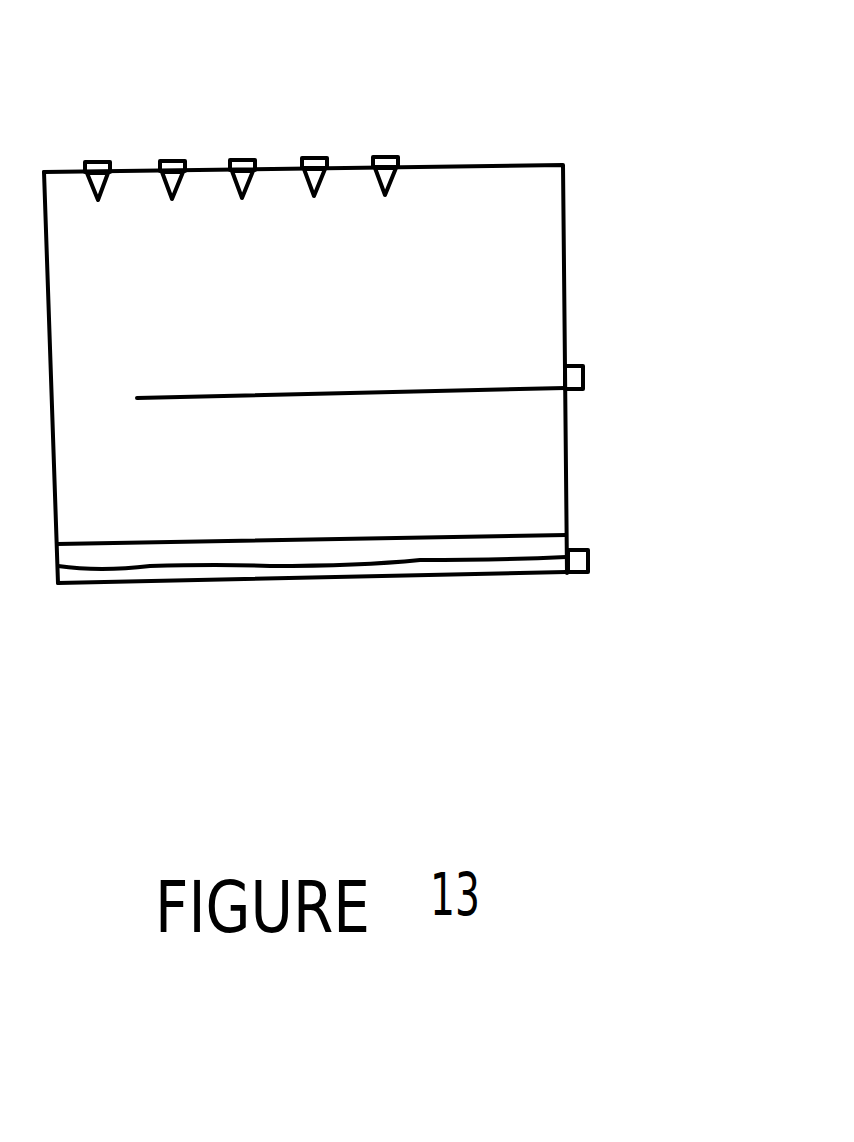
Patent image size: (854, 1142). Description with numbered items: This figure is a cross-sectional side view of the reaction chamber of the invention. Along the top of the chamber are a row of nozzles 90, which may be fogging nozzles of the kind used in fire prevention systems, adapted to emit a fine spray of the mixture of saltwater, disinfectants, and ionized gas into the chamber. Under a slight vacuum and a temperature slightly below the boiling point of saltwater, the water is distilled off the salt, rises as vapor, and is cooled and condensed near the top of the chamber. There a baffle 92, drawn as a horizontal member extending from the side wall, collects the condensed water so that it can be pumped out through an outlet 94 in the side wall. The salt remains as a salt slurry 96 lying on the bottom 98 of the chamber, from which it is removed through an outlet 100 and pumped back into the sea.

The nozzles 90 is at (316, 158).
The baffle 92 is at (527, 387).
The outlet 94 is at (583, 378).
The salt slurry 96 is at (250, 570).
The bottom 98 is at (512, 577).
The outlet 100 is at (590, 557).